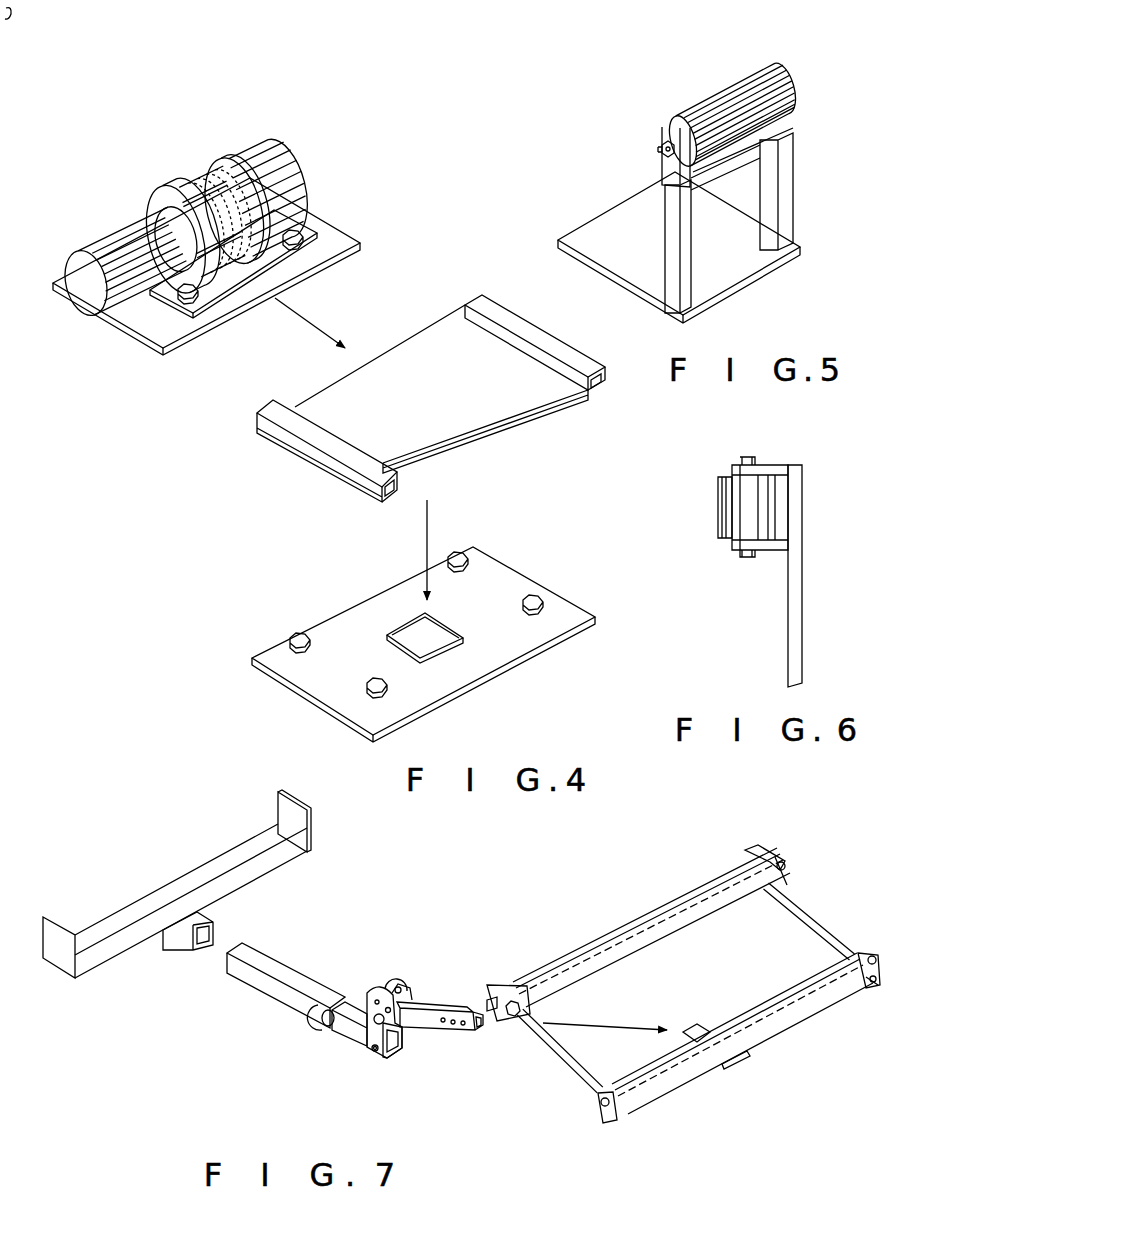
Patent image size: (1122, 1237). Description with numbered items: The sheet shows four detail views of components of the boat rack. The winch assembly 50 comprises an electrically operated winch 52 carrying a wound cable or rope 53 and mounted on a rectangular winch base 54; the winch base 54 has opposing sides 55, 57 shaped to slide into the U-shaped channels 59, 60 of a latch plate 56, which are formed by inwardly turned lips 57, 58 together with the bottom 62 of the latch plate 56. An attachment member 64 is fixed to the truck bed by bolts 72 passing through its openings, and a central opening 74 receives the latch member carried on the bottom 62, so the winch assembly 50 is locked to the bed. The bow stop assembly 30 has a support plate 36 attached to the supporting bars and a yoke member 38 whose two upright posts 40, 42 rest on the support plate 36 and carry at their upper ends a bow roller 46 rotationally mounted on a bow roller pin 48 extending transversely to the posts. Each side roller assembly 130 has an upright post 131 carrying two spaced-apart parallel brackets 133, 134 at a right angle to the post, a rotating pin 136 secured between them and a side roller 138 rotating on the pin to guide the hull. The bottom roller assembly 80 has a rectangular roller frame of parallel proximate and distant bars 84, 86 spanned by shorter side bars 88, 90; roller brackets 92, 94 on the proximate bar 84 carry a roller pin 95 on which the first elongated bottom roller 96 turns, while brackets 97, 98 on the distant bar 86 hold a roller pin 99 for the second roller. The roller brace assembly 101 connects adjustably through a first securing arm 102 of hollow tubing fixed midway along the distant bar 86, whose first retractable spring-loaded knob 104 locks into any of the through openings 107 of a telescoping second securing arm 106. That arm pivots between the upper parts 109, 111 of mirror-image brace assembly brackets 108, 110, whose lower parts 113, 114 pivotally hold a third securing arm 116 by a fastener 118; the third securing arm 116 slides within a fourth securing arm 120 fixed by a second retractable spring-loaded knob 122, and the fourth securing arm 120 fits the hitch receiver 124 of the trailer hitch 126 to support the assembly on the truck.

In FIG. 4, the winch assembly 50 is at (250, 86).
In FIG. 4, the electrically operated winch 52 is at (285, 150).
In FIG. 4, the cable or rope 53 is at (190, 170).
In FIG. 4, the winch base 54 is at (340, 240).
In FIG. 4, the opposing side of winch base 55 is at (130, 340).
In FIG. 4, the latch plate 56 is at (520, 308).
In FIG. 4, the inwardly turned lip 57 is at (257, 405).
In FIG. 4, the inwardly turned lip 58 is at (474, 300).
In FIG. 4, the U-shaped channel 59 is at (393, 490).
In FIG. 4, the U-shaped channel 60 is at (597, 386).
In FIG. 4, the bottom of latch plate 62 is at (533, 425).
In FIG. 4, the attachment member 64 is at (519, 565).
In FIG. 4, the bolts 72 is at (298, 632).
In FIG. 4, the opening 74 is at (450, 650).
In FIG. 5, the roller assembly 30 is at (791, 42).
In FIG. 5, the support plate 36 is at (630, 290).
In FIG. 5, the yoke member 38 is at (758, 217).
In FIG. 5, the upright post 40 is at (687, 283).
In FIG. 5, the upright post 42 is at (786, 205).
In FIG. 5, the bow roller 46 is at (710, 95).
In FIG. 5, the bow roller pin 48 is at (658, 149).
In FIG. 6, the side roller assembly 130 is at (801, 445).
In FIG. 6, the upright post 131 is at (800, 540).
In FIG. 6, the bracket 133 is at (768, 461).
In FIG. 6, the bracket 134 is at (772, 555).
In FIG. 6, the rotating pin 136 is at (745, 555).
In FIG. 6, the side roller 138 is at (720, 508).
In FIG. 7, the bottom roller assembly 80 is at (713, 822).
In FIG. 7, the proximate bar 84 is at (598, 937).
In FIG. 7, the distant bar 86 is at (802, 1022).
In FIG. 7, the side bar 88 is at (560, 1080).
In FIG. 7, the side bar 90 is at (800, 910).
In FIG. 7, the roller bracket 92 is at (500, 985).
In FIG. 7, the roller bracket 94 is at (765, 851).
In FIG. 7, the roller pin 95 is at (790, 866).
In FIG. 7, the first elongated bottom roller 96 is at (690, 940).
In FIG. 7, the bracket 97 is at (600, 1123).
In FIG. 7, the bracket 98 is at (870, 986).
In FIG. 7, the roller pin 99 is at (872, 955).
In FIG. 7, the roller brace assembly 101 is at (419, 885).
In FIG. 7, the first securing arm 102 is at (700, 1028).
In FIG. 7, the first retractable spring-loaded knob 104 is at (730, 1068).
In FIG. 7, the second securing arm 106 is at (445, 1000).
In FIG. 7, the through openings 107 is at (462, 1026).
In FIG. 7, the brace assembly bracket 108 is at (345, 985).
In FIG. 7, the upper part 109 is at (372, 990).
In FIG. 7, the brace assembly bracket 110 is at (398, 980).
In FIG. 7, the upper part 111 is at (423, 985).
In FIG. 7, the lower part 113 is at (373, 1068).
In FIG. 7, the lower part 114 is at (400, 1052).
In FIG. 7, the third securing arm 116 is at (348, 1042).
In FIG. 7, the fastener 118 is at (372, 1062).
In FIG. 7, the fourth securing arm 120 is at (262, 950).
In FIG. 7, the second retractable spring-loaded knob 122 is at (306, 1038).
In FIG. 7, the hitch receiver 124 is at (185, 937).
In FIG. 7, the trailer hitch 126 is at (136, 800).